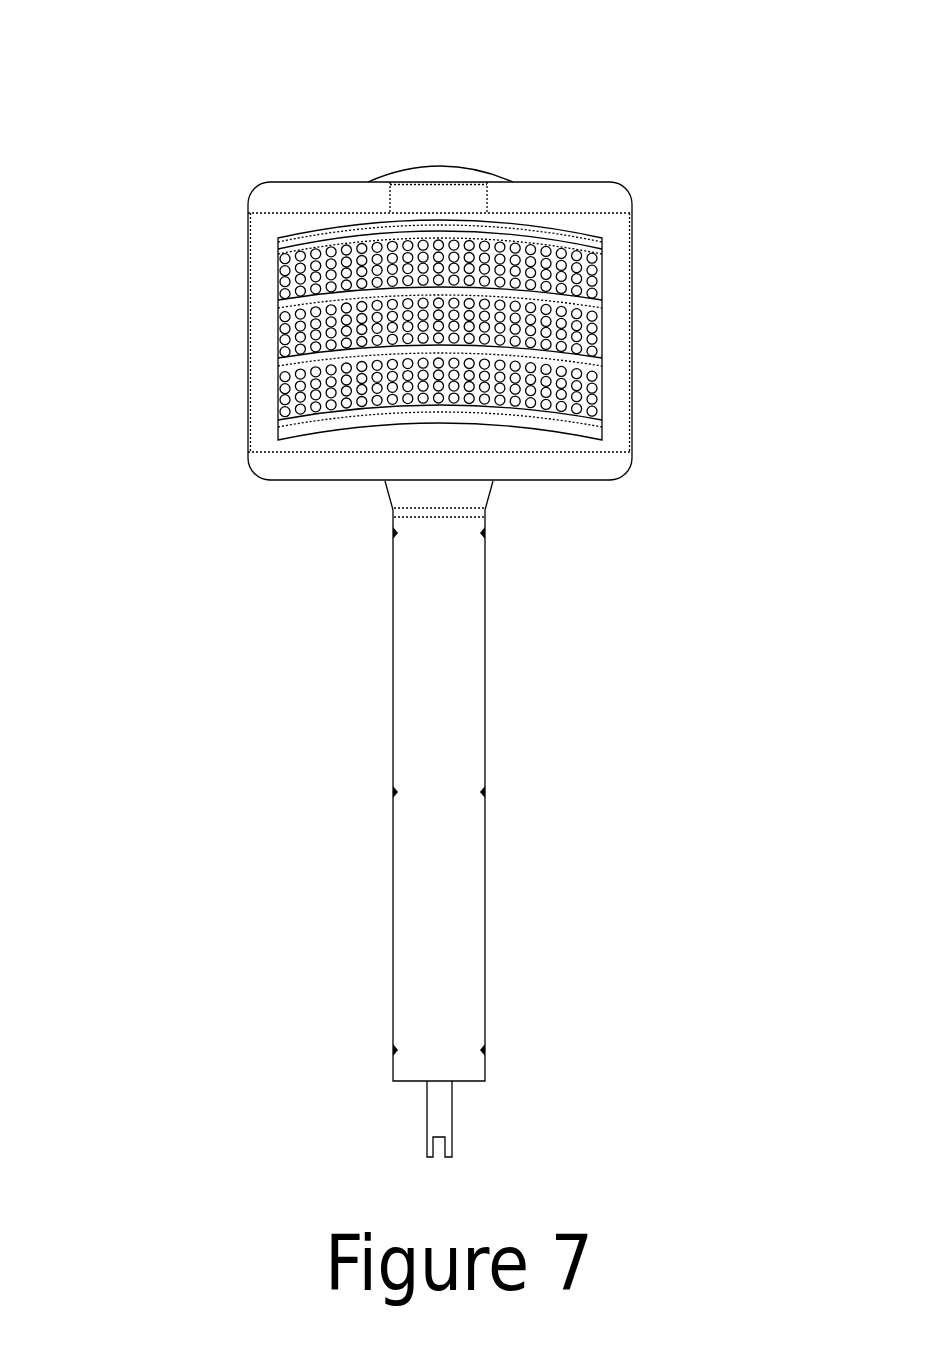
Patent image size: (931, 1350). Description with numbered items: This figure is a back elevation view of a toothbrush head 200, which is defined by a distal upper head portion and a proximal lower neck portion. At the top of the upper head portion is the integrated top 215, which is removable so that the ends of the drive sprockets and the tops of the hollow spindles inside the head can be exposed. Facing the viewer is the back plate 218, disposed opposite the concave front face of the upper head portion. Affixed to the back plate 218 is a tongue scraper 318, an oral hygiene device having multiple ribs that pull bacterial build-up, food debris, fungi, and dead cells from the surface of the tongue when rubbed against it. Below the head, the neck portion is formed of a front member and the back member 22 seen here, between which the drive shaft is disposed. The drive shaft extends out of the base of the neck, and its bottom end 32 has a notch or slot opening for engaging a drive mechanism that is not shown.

The toothbrush head 200 is at (196, 146).
The top 215 is at (455, 167).
The back plate 218 is at (280, 278).
The tongue scraper 318 is at (598, 305).
The back member 22 is at (421, 938).
The bottom end 32 is at (443, 1147).